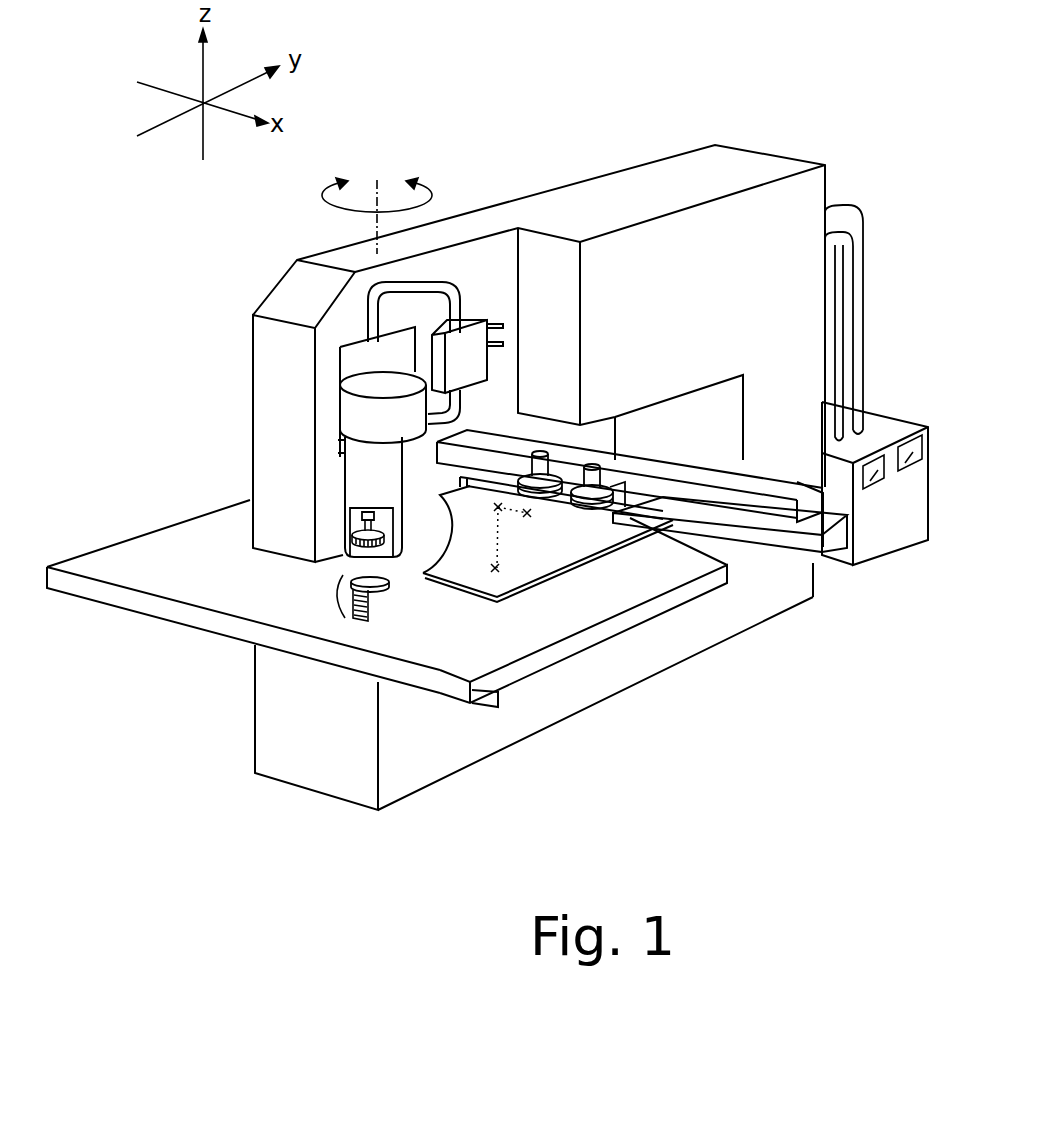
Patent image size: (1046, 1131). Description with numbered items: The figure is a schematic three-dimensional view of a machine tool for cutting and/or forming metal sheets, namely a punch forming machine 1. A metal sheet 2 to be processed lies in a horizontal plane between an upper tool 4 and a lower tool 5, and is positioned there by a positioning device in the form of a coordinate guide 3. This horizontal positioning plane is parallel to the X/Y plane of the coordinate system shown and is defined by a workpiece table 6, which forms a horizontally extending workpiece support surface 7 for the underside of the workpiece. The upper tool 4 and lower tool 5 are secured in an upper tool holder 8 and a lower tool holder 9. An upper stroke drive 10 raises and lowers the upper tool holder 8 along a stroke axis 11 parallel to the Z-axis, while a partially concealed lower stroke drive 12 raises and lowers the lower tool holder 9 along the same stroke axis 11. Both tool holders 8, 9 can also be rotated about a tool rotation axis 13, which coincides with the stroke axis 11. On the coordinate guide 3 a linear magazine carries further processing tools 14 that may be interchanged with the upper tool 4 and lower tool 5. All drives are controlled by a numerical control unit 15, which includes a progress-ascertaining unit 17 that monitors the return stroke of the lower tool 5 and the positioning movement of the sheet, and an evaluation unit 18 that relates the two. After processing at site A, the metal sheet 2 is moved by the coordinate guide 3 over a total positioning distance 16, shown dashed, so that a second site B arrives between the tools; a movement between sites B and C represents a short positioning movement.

The punch forming machine 1 is at (617, 152).
The metal sheet 2 is at (527, 583).
The coordinate guide 3 is at (783, 533).
The upper tool 4 is at (350, 537).
The lower tool 5 is at (353, 588).
The workpiece table 6 is at (460, 700).
The workpiece support surface 7 is at (123, 555).
The upper tool holder 8 is at (348, 548).
The lower tool holder 9 is at (373, 600).
The upper stroke drive 10 is at (343, 420).
The stroke axis 11 is at (335, 216).
The lower stroke drive 12 is at (373, 597).
The tool rotation axis 13 is at (370, 220).
The further processing tools 14 is at (615, 503).
The numerical control unit 15 is at (898, 570).
The total positioning distance 16 is at (566, 505).
The progress-ascertaining unit 17 is at (885, 455).
The evaluation unit 18 is at (922, 435).